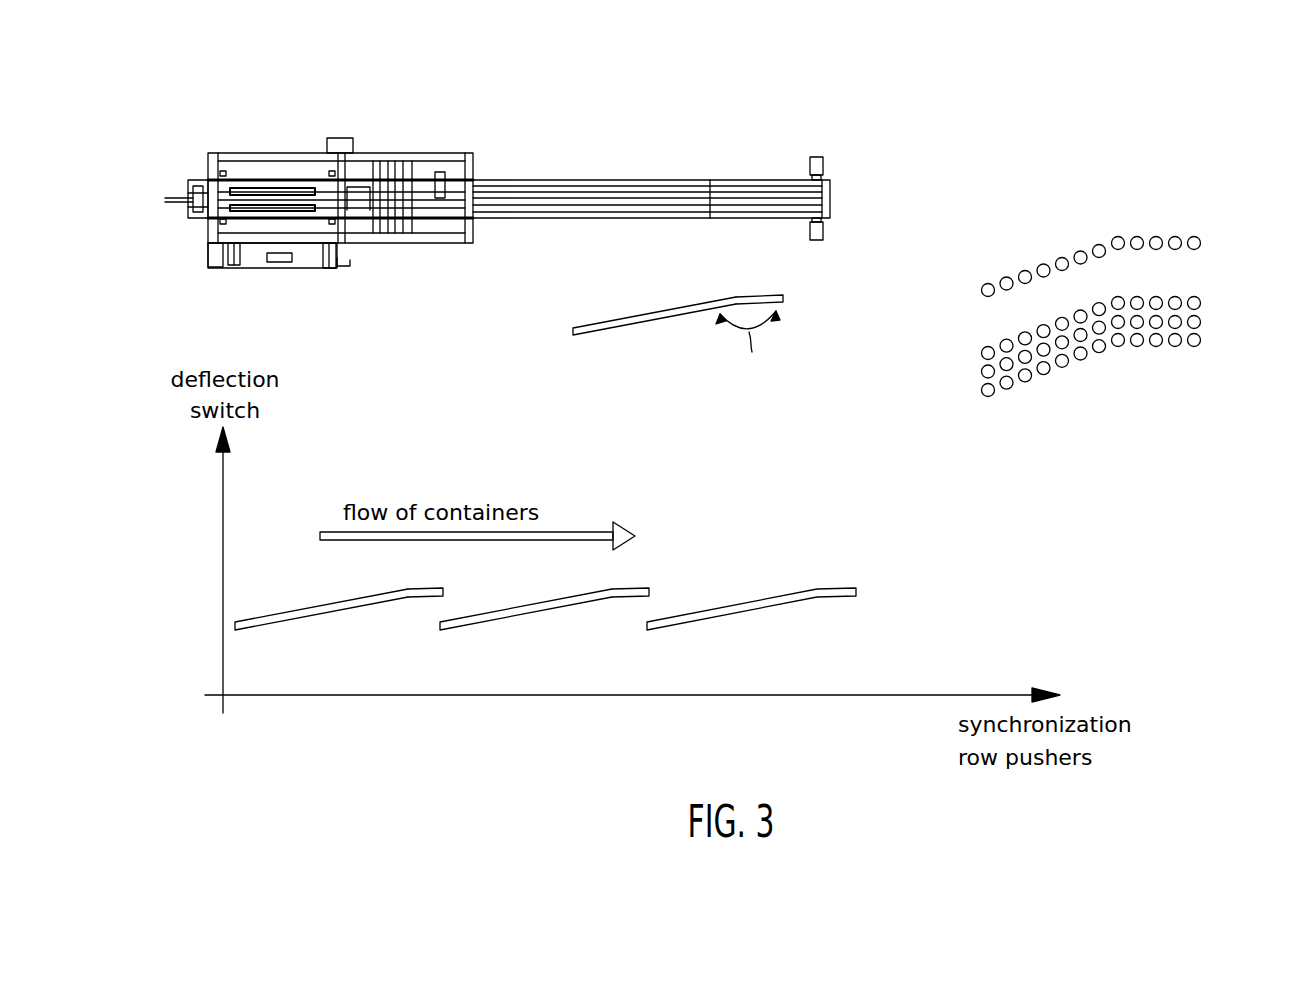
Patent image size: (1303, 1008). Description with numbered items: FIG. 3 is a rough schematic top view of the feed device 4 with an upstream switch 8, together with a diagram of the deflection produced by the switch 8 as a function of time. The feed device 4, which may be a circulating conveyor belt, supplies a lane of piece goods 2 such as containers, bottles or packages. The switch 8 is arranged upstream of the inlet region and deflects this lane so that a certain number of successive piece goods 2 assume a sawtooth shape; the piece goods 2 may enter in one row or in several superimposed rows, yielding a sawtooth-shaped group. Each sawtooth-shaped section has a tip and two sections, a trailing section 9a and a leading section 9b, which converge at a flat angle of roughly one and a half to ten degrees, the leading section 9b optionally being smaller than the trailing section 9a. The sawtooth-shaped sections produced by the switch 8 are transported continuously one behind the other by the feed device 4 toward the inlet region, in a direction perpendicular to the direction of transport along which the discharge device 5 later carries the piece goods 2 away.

The piece goods 2 is at (816, 589).
The feed device 4 is at (587, 180).
The discharge device 5 is at (738, 423).
The switch 8 is at (282, 157).
The trailing section 9a is at (657, 314).
The leading section 9b is at (773, 294).